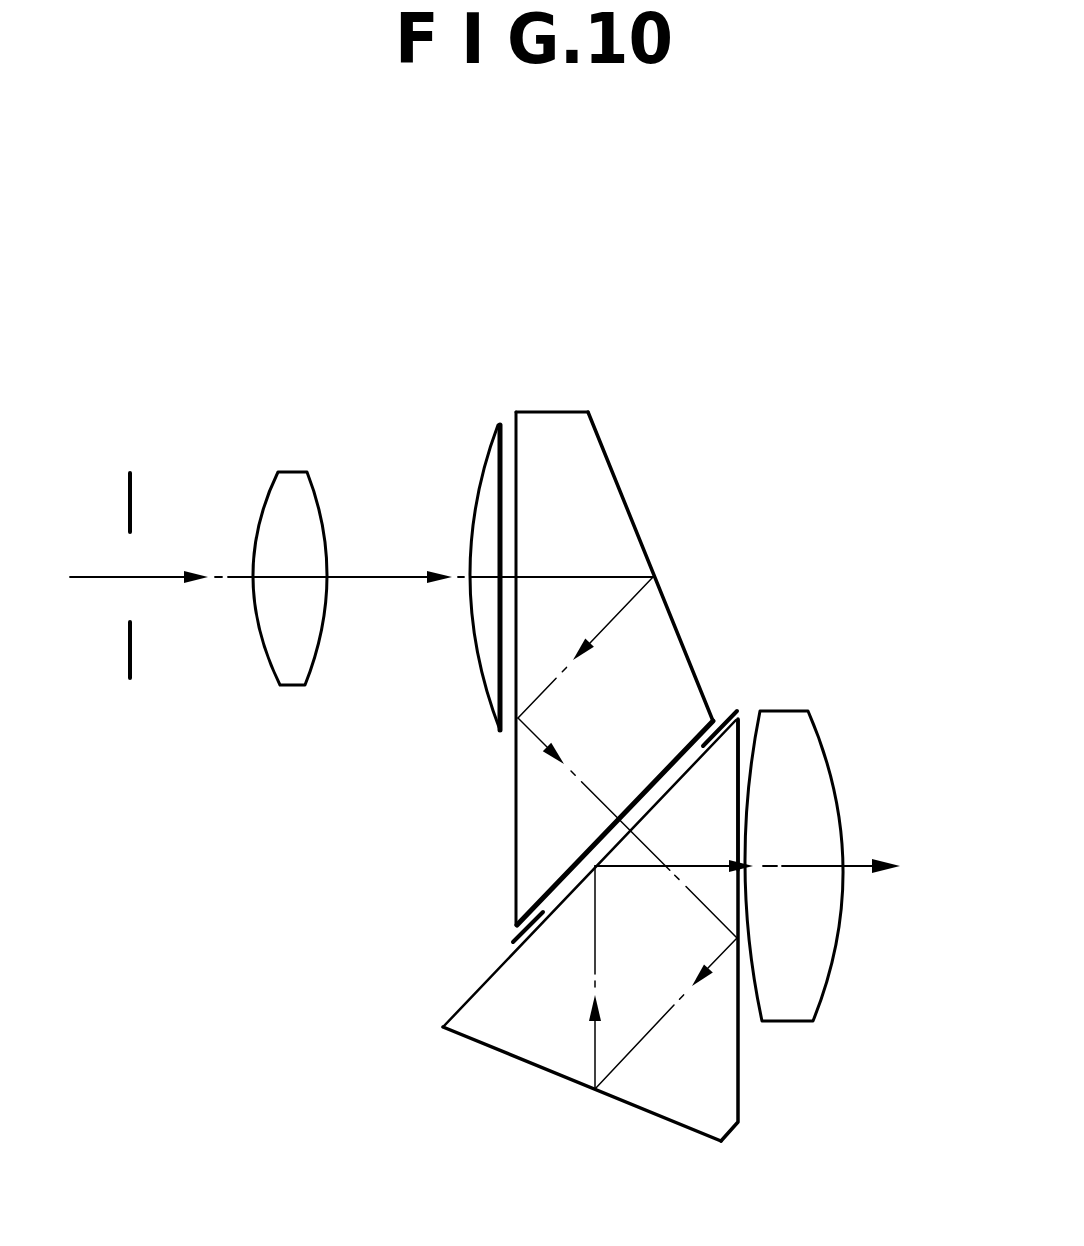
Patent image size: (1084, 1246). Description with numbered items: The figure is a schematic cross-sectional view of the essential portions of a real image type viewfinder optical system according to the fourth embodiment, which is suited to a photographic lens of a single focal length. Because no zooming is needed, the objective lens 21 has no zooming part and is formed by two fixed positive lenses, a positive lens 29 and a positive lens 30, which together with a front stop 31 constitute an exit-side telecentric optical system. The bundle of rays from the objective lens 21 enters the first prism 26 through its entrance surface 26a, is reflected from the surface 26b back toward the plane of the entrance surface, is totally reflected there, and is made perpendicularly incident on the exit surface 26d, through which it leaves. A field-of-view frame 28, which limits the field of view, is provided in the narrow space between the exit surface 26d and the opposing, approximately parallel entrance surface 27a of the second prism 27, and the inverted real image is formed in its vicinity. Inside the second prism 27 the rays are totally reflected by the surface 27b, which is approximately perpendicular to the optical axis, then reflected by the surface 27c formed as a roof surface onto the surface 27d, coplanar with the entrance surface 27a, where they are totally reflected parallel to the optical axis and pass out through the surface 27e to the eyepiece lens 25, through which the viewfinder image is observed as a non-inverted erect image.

The objective lens 21 is at (483, 343).
The front stop 31 is at (130, 490).
The positive lens 29 is at (296, 472).
The positive lens 30 is at (483, 462).
The first prism 26 is at (522, 612).
The entrance surface 26a is at (411, 668).
The surface 1-2 26b is at (626, 498).
The exit surface 26d is at (672, 752).
The field-of-view frame 28 is at (736, 712).
The second prism 27 is at (631, 975).
The entrance surface 27a is at (532, 873).
The surface 2-2 27b is at (739, 1083).
The roof surface 27c is at (645, 1113).
The surface 2-4 27d is at (482, 990).
The exit surface of second prism 27e is at (737, 778).
The eyepiece lens 25 is at (828, 756).